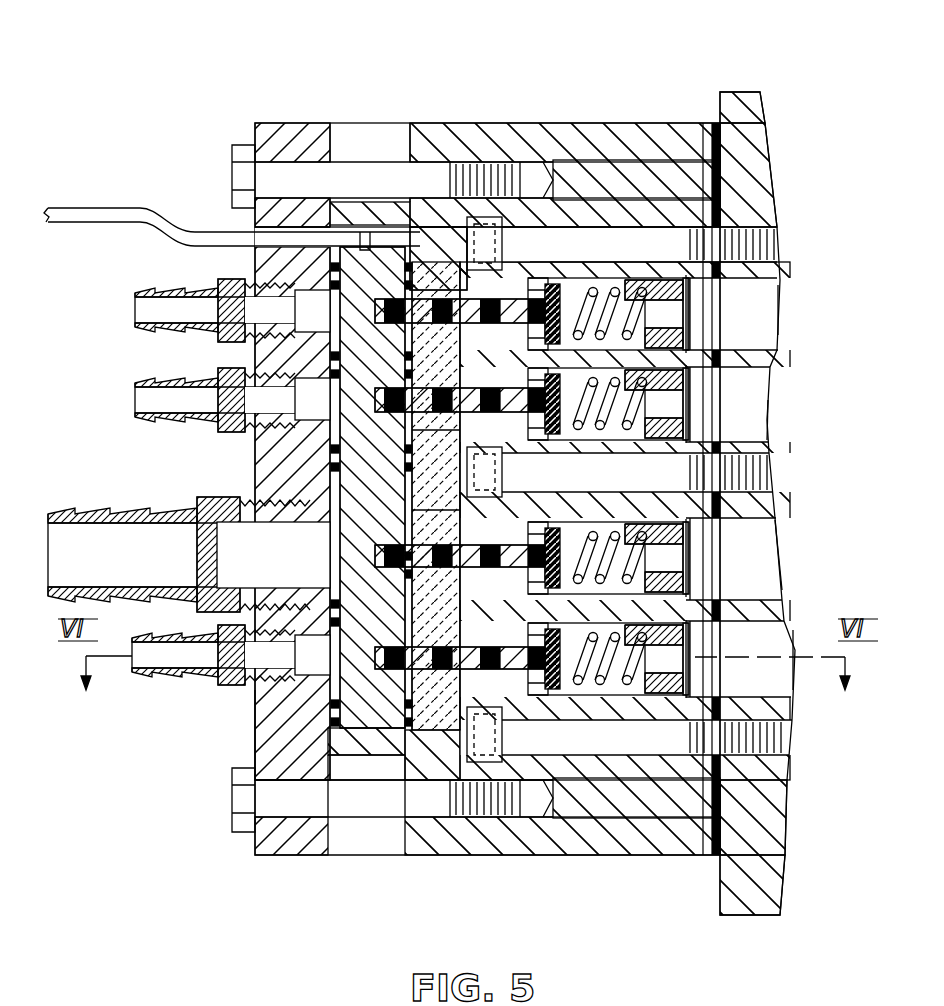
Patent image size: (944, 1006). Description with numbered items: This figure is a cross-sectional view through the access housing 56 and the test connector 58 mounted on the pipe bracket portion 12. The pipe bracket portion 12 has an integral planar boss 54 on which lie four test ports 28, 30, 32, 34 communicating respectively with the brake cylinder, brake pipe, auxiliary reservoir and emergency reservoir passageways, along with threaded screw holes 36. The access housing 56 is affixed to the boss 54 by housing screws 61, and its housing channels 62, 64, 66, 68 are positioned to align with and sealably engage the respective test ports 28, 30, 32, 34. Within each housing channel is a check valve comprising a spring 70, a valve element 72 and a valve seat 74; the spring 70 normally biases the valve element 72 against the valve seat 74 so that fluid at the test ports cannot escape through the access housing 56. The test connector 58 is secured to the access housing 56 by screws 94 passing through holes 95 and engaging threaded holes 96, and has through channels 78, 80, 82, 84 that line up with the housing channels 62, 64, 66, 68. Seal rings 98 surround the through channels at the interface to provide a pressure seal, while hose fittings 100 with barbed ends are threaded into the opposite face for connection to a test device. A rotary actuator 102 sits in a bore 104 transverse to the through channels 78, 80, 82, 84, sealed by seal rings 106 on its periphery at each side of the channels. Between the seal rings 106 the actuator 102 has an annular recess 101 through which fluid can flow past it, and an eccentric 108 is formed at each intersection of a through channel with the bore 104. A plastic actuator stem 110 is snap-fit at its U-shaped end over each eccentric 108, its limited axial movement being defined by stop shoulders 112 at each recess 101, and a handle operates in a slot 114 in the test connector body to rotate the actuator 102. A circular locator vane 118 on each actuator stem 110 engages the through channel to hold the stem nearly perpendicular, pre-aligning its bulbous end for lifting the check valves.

The pipe bracket portion 12 is at (742, 90).
The test port 28 is at (790, 640).
The test port 30 is at (770, 540).
The test port 32 is at (750, 425).
The test port 34 is at (760, 335).
The threaded screw holes 36 is at (745, 255).
The boss 54 is at (752, 152).
The access housing 56 is at (650, 120).
The test connector 58 is at (312, 120).
The housing screws 61 is at (690, 247).
The housing channel 62 is at (690, 705).
The housing channel 64 is at (700, 563).
The housing channel 66 is at (700, 385).
The housing channel 68 is at (700, 302).
The spring 70 is at (688, 288).
The valve element 72 is at (588, 298).
The valve seat 74 is at (546, 298).
The through channel 78 is at (328, 668).
The through channel 80 is at (290, 568).
The through channel 82 is at (328, 412).
The through channel 84 is at (328, 324).
The screws 94 is at (248, 152).
The holes 95 is at (285, 160).
The threaded holes 96 is at (500, 160).
The seal rings 98 is at (445, 345).
The hose fittings 100 is at (222, 290).
The annular recess 101 is at (405, 498).
The rotary actuator 102 is at (300, 765).
The bore 104 is at (338, 440).
The seal rings 106 is at (406, 470).
The eccentric 108 is at (340, 492).
The actuator stem 110 is at (438, 258).
The stop shoulders 112 is at (102, 214).
The slot 114 is at (245, 240).
The locator vane 118 is at (420, 632).